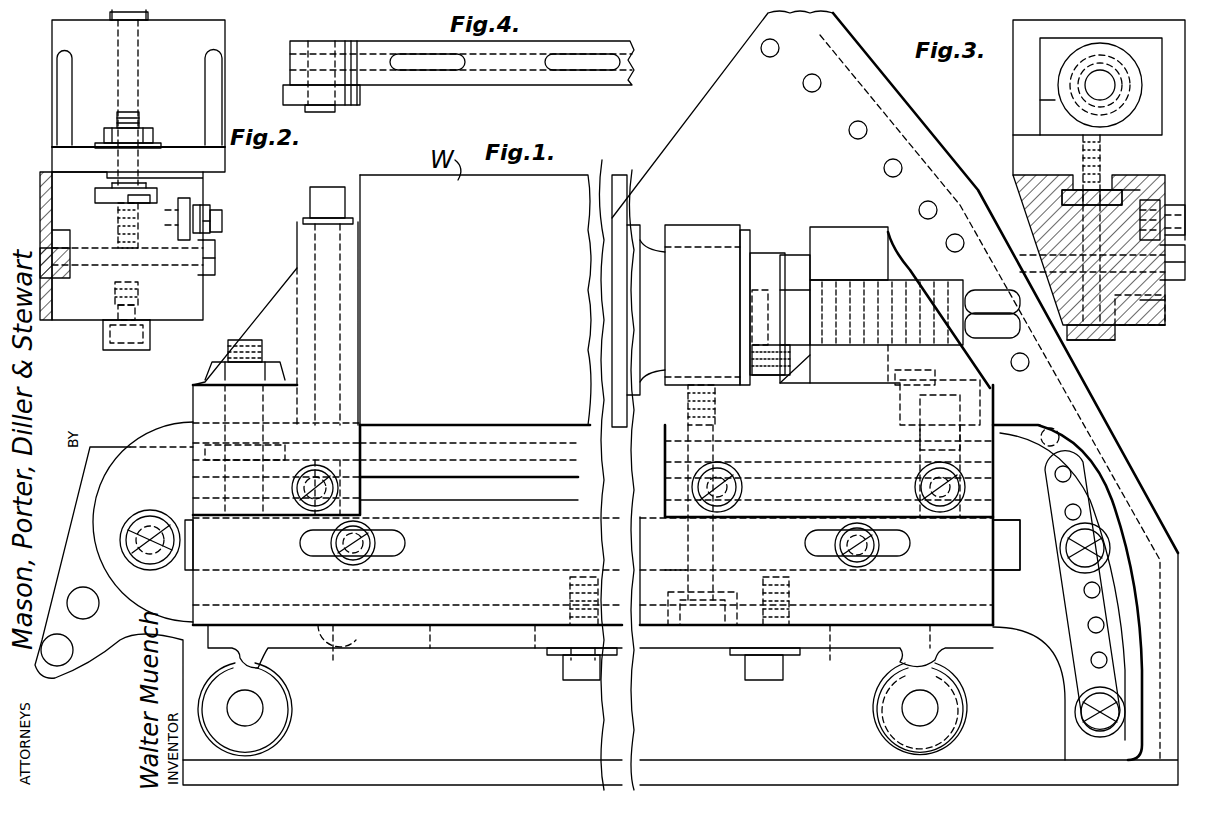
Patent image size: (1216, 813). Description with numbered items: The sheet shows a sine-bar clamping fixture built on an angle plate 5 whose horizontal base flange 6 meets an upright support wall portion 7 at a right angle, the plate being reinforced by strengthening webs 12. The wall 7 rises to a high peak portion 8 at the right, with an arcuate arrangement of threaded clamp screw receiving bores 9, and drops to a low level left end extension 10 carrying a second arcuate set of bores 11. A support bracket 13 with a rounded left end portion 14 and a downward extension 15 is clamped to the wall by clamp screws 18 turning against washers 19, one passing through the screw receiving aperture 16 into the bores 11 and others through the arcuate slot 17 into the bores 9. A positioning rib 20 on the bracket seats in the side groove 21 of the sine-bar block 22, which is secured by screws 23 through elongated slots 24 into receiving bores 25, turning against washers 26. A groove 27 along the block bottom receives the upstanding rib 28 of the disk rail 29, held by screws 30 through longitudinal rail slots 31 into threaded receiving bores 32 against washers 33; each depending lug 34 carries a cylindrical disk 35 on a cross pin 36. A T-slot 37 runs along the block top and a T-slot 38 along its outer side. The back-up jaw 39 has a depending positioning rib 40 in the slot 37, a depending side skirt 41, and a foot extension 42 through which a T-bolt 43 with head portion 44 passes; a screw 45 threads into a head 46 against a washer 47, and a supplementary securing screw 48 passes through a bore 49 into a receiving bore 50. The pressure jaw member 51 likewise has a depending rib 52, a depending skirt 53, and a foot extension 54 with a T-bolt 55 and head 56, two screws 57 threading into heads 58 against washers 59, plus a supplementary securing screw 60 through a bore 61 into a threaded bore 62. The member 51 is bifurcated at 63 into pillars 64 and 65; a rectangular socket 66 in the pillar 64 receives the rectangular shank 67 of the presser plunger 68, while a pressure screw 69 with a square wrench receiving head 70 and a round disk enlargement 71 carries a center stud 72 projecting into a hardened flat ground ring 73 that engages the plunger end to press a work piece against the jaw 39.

In FIG. 1, the angle plate 5 is at (385, 752).
In FIG. 1, the horizontal base flange 6 is at (445, 778).
In FIG. 1, the upright support wall portion 7 is at (638, 720).
In FIG. 1, the high peak portion 8 is at (905, 120).
In FIG. 1, the threaded clamp screw receiving bores 9 is at (848, 128).
In FIG. 1, the low level left end extension 10 is at (100, 458).
In FIG. 1, the threaded clamp screw receiving bores 11 is at (68, 628).
In FIG. 3, the strengthening webs 12 is at (1092, 83).
In FIG. 2, the support bracket 13 is at (48, 168).
In FIG. 3, the support bracket 13 is at (1072, 63).
In FIG. 1, the support bracket 13 is at (1005, 432).
In FIG. 1, the rounded left end portion 14 is at (162, 440).
In FIG. 1, the downward extension 15 is at (1128, 650).
In FIG. 1, the screw receiving aperture 16 is at (142, 525).
In FIG. 1, the arcuate slot 17 is at (83, 605).
In FIG. 1, the clamp screws 18 is at (145, 555).
In FIG. 1, the washers 19 is at (122, 540).
In FIG. 2, the positioning rib 20 is at (68, 275).
In FIG. 1, the positioning rib 20 is at (188, 575).
In FIG. 2, the side groove 21 is at (58, 230).
In FIG. 1, the side groove 21 is at (525, 572).
In FIG. 2, the sine-bar block 22 is at (62, 200).
In FIG. 3, the sine-bar block 22 is at (1150, 328).
In FIG. 1, the sine-bar block 22 is at (985, 550).
In FIG. 2, the screws 23 is at (215, 257).
In FIG. 3, the screws 23 is at (1150, 320).
In FIG. 1, the screws 23 is at (378, 560).
In FIG. 1, the elongated slots 24 is at (318, 558).
In FIG. 2, the receiving bores 25 is at (48, 275).
In FIG. 2, the washers 26 is at (200, 282).
In FIG. 1, the washers 26 is at (356, 562).
In FIG. 2, the groove 27 is at (125, 312).
In FIG. 1, the groove 27 is at (248, 600).
In FIG. 2, the upstanding rib 28 is at (138, 314).
In FIG. 3, the upstanding rib 28 is at (1100, 340).
In FIG. 1, the upstanding rib 28 is at (348, 640).
In FIG. 2, the disk rail 29 is at (145, 340).
In FIG. 4, the disk rail 29 is at (602, 50).
In FIG. 3, the disk rail 29 is at (1115, 345).
In FIG. 1, the disk rail 29 is at (410, 645).
In FIG. 1, the screws 30 is at (565, 668).
In FIG. 2, the longitudinal rail slots 31 is at (150, 178).
In FIG. 4, the longitudinal rail slots 31 is at (415, 56).
In FIG. 1, the longitudinal rail slots 31 is at (356, 660).
In FIG. 1, the threaded receiving bores 32 is at (568, 592).
In FIG. 1, the washers 33 is at (545, 655).
In FIG. 1, the depending lug 34 is at (280, 712).
In FIG. 4, the cylindrical disk 35 is at (360, 100).
In FIG. 1, the cylindrical disk 35 is at (280, 730).
In FIG. 4, the cross pin 36 is at (330, 112).
In FIG. 1, the cross pin 36 is at (240, 700).
In FIG. 3, the T-slot 37 is at (1013, 185).
In FIG. 2, the T-slot 38 is at (203, 270).
In FIG. 3, the T-slot 38 is at (1165, 295).
In FIG. 1, the T-slot 38 is at (490, 445).
In FIG. 2, the back-up jaw 39 is at (62, 78).
In FIG. 1, the back-up jaw 39 is at (358, 338).
In FIG. 2, the depending positioning rib 40 is at (130, 178).
In FIG. 1, the depending positioning rib 40 is at (355, 425).
In FIG. 2, the depending side skirt 41 is at (212, 192).
In FIG. 1, the depending side skirt 41 is at (360, 478).
In FIG. 2, the foot extension 42 is at (82, 147).
In FIG. 1, the foot extension 42 is at (193, 405).
In FIG. 2, the T-bolt 43 is at (133, 112).
In FIG. 1, the T-bolt 43 is at (235, 338).
In FIG. 2, the head portion 44 is at (152, 196).
In FIG. 1, the head portion 44 is at (270, 445).
In FIG. 2, the screw 45 is at (220, 210).
In FIG. 1, the screw 45 is at (292, 490).
In FIG. 2, the head 46 is at (176, 222).
In FIG. 1, the head 46 is at (345, 495).
In FIG. 2, the washer 47 is at (222, 232).
In FIG. 1, the washer 47 is at (292, 480).
In FIG. 2, the supplementary securing screw 48 is at (122, 42).
In FIG. 1, the supplementary securing screw 48 is at (345, 208).
In FIG. 2, the bore 49 is at (138, 68).
In FIG. 1, the bore 49 is at (350, 275).
In FIG. 2, the receiving bore 50 is at (118, 245).
In FIG. 3, the pressure jaw member 51 is at (1018, 132).
In FIG. 1, the pressure jaw member 51 is at (798, 365).
In FIG. 3, the depending rib 52 is at (1073, 182).
In FIG. 1, the depending rib 52 is at (845, 425).
In FIG. 3, the depending skirt 53 is at (1180, 200).
In FIG. 1, the depending skirt 53 is at (655, 462).
In FIG. 1, the foot extension 54 is at (995, 400).
In FIG. 1, the T-bolt 55 is at (915, 358).
In FIG. 3, the head 56 is at (1103, 190).
In FIG. 1, the head 56 is at (925, 435).
In FIG. 3, the screws 57 is at (1152, 200).
In FIG. 1, the screws 57 is at (722, 478).
In FIG. 1, the heads 58 is at (760, 470).
In FIG. 3, the washers 59 is at (1190, 262).
In FIG. 1, the washers 59 is at (742, 492).
In FIG. 3, the supplementary securing screw 60 is at (1120, 326).
In FIG. 1, the supplementary securing screw 60 is at (700, 625).
In FIG. 3, the bore 61 is at (1030, 190).
In FIG. 1, the bore 61 is at (685, 545).
In FIG. 3, the threaded bore 62 is at (1080, 150).
In FIG. 1, the threaded bore 62 is at (718, 420).
In FIG. 1, the bifurcation 63 is at (798, 388).
In FIG. 3, the pillar 64 is at (1128, 190).
In FIG. 1, the pillar 64 is at (682, 228).
In FIG. 1, the pillar 65 is at (845, 235).
In FIG. 3, the rectangular socket 66 is at (1040, 100).
In FIG. 1, the rectangular socket 66 is at (715, 245).
In FIG. 1, the rectangular shank 67 is at (750, 248).
In FIG. 1, the presser plunger 68 is at (640, 228).
In FIG. 3, the pressure screw 69 is at (1080, 95).
In FIG. 1, the pressure screw 69 is at (918, 285).
In FIG. 1, the square wrench receiving head 70 is at (992, 292).
In FIG. 1, the round disk enlargement 71 is at (775, 268).
In FIG. 1, the center stud 72 is at (758, 303).
In FIG. 1, the hardened flat ground ring 73 is at (755, 345).